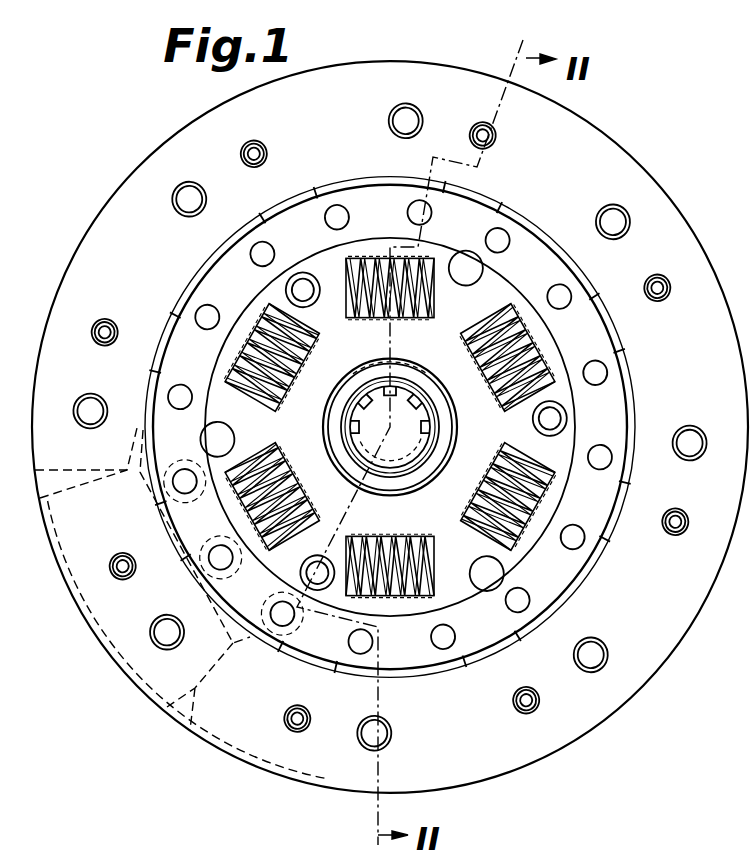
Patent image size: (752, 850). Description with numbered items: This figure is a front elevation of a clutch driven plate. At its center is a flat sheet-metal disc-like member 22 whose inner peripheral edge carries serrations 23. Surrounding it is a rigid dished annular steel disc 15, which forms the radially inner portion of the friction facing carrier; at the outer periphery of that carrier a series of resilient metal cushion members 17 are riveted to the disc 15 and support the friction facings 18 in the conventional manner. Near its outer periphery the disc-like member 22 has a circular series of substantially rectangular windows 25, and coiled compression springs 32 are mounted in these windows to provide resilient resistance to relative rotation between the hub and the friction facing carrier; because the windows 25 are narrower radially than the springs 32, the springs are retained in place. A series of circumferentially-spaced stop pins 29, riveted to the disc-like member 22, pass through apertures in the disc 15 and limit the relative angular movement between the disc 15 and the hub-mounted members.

The rigid dished annular steel disc 15 is at (562, 278).
The resilient metal cushion members 17 is at (140, 681).
The friction facings 18 is at (602, 162).
The disc-like member 22 is at (566, 418).
The serrations 23 is at (371, 362).
The windows 25 is at (543, 488).
The stop pins 29 is at (292, 288).
The coiled compression springs 32 is at (540, 343).